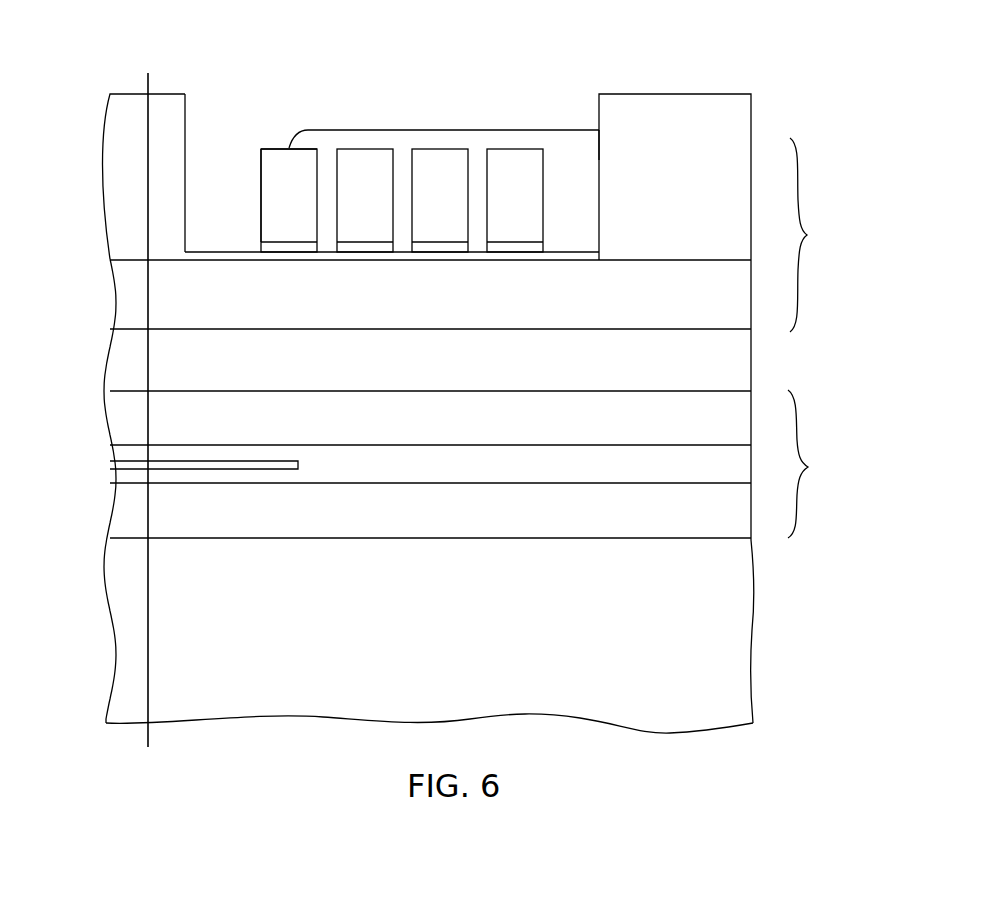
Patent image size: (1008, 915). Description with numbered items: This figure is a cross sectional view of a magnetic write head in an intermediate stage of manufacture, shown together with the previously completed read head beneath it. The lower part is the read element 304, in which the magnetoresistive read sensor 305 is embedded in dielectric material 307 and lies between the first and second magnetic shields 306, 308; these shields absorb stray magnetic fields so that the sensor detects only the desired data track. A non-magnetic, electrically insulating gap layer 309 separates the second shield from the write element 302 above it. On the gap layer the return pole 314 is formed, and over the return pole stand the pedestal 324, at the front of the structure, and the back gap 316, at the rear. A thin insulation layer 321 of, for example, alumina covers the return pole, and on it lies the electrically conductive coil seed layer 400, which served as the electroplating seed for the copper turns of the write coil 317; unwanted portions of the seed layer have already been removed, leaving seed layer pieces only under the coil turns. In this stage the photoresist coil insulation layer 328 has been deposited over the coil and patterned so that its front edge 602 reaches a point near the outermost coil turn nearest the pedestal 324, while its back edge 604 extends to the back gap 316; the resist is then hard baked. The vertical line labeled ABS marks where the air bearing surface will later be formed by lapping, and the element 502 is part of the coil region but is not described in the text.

The air bearing surface ABS is at (148, 73).
The write element 302 is at (806, 159).
The read element 304 is at (804, 400).
The magnetoresistive read sensor 305 is at (300, 463).
The first magnetic shield 306 is at (380, 508).
The dielectric material 307 is at (626, 463).
The second magnetic shield 308 is at (383, 421).
The non-magnetic, electrically insulating gap layer 309 is at (402, 352).
The return pole 314 is at (355, 291).
The back gap 316 is at (701, 187).
The write coil 317 is at (402, 200).
The thin insulation layer 321 is at (226, 258).
The pedestal 324 is at (123, 172).
The photoresist coil insulation layer 328 is at (567, 172).
The coil seed layer 400 is at (520, 290).
The coil turn conductor 502 is at (290, 166).
The front edge 602 is at (289, 148).
The back edge 604 is at (601, 150).